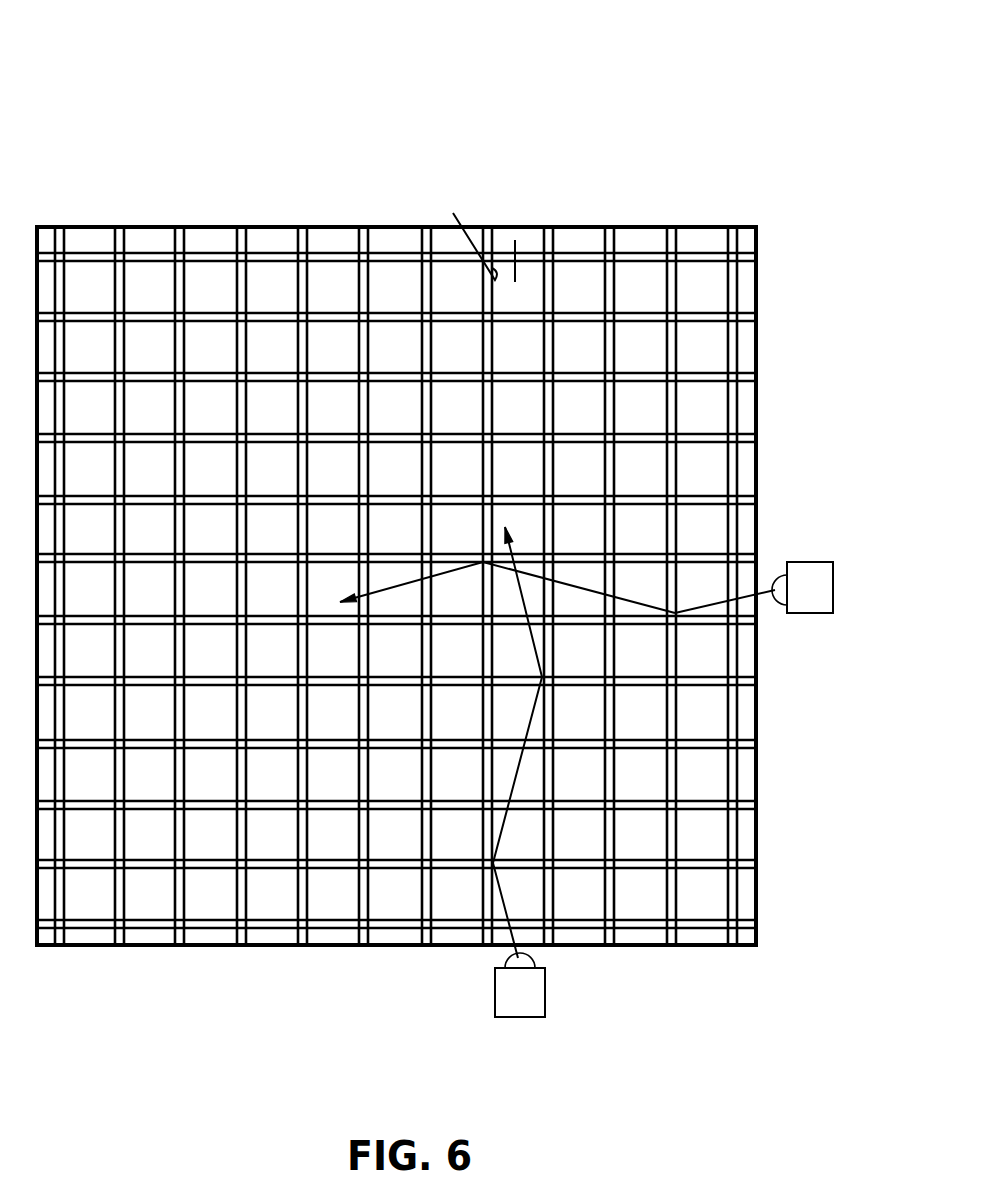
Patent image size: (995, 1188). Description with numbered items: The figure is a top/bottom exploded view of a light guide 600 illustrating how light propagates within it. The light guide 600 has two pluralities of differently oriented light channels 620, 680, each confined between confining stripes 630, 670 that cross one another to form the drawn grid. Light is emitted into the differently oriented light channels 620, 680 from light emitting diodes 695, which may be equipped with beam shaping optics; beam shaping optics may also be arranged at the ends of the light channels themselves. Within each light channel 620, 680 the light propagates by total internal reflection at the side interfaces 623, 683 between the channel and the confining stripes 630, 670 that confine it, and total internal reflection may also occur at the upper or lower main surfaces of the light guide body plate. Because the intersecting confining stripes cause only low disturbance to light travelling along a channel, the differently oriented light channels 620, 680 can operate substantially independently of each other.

The light guide 600 is at (140, 175).
The light channel 620 is at (515, 240).
The side interface 623 is at (458, 210).
The confining stripe 630 is at (483, 240).
The confining stripe 670 is at (750, 552).
The light channel 680 is at (712, 575).
The side interface 683 is at (728, 627).
The light emitting diode 695 is at (518, 992).